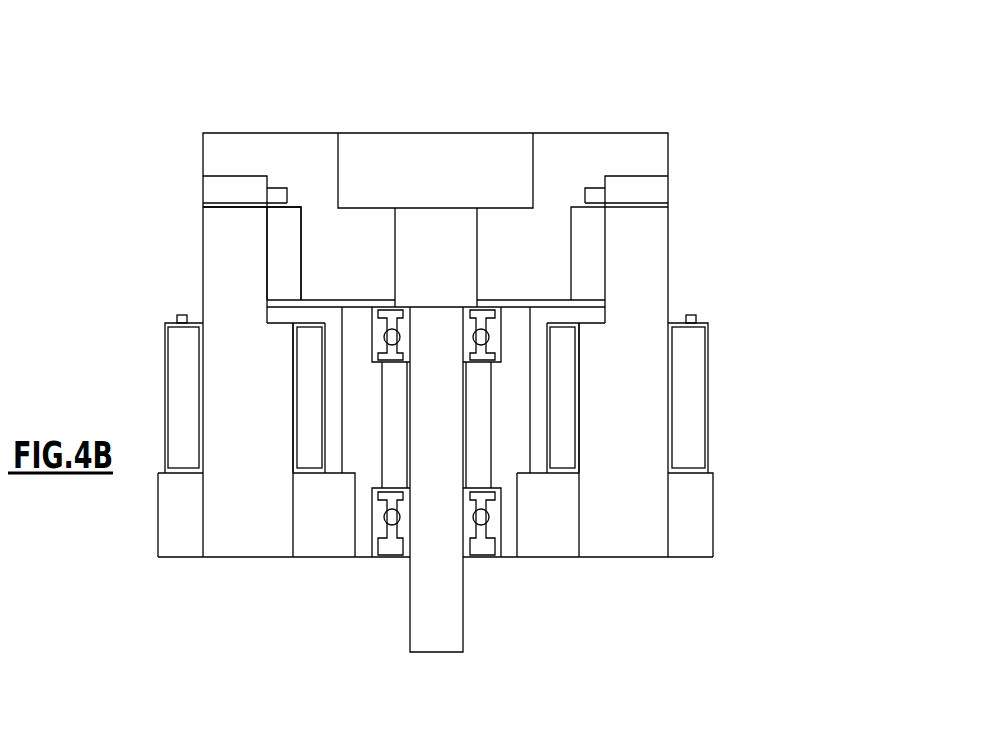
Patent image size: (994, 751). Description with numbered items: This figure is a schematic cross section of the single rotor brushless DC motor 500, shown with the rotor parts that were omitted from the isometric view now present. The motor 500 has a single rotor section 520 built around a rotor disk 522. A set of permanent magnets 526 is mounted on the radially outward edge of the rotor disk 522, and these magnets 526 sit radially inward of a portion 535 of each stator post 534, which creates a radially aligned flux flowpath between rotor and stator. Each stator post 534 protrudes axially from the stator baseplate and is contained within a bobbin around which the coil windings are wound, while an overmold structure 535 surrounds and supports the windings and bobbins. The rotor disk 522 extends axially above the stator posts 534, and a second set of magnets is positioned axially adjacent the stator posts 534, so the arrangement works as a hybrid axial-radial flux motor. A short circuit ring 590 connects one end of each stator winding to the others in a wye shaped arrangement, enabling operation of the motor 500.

The brushless DC motor 500 is at (771, 104).
The rotor section 520 is at (672, 84).
The rotor disk 522 is at (583, 160).
The permanent magnets 526 is at (590, 257).
The stator post 534 is at (200, 397).
The overmold structure 535 is at (228, 257).
The short circuit ring 590 is at (691, 313).